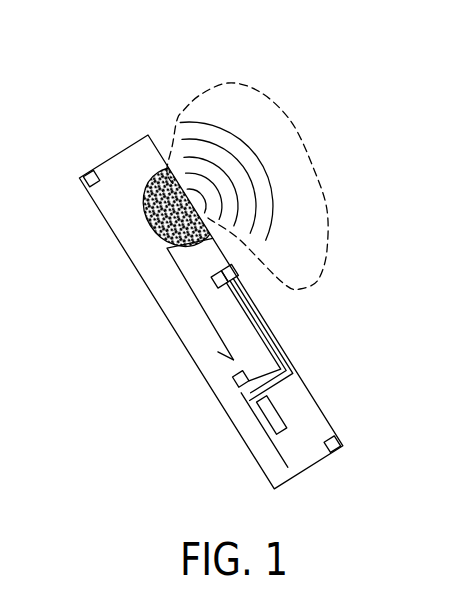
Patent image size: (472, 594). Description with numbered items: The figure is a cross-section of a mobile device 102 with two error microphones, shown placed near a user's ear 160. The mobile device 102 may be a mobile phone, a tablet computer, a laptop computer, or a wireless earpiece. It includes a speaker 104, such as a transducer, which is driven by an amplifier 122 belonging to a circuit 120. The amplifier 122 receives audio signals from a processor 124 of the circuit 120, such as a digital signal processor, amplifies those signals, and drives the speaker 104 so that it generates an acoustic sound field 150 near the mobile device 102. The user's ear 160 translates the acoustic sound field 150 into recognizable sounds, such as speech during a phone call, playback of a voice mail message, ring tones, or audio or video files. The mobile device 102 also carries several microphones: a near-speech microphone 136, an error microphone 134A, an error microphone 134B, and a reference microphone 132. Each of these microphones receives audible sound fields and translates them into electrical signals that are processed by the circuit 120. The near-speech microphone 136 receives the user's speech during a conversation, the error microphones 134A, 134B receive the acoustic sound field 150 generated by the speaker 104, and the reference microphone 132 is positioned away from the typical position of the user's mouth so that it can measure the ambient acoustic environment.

The mobile device 102 is at (104, 217).
The speaker 104 is at (148, 218).
The circuit 120 is at (262, 424).
The amplifier 122 is at (233, 382).
The processor 124 is at (281, 420).
The reference microphone 132 is at (92, 170).
The error microphone 134A is at (240, 274).
The error microphone 134B is at (213, 280).
The near-speech microphone 136 is at (337, 440).
The acoustic sound field 150 is at (275, 200).
The user's ear 160 is at (232, 83).